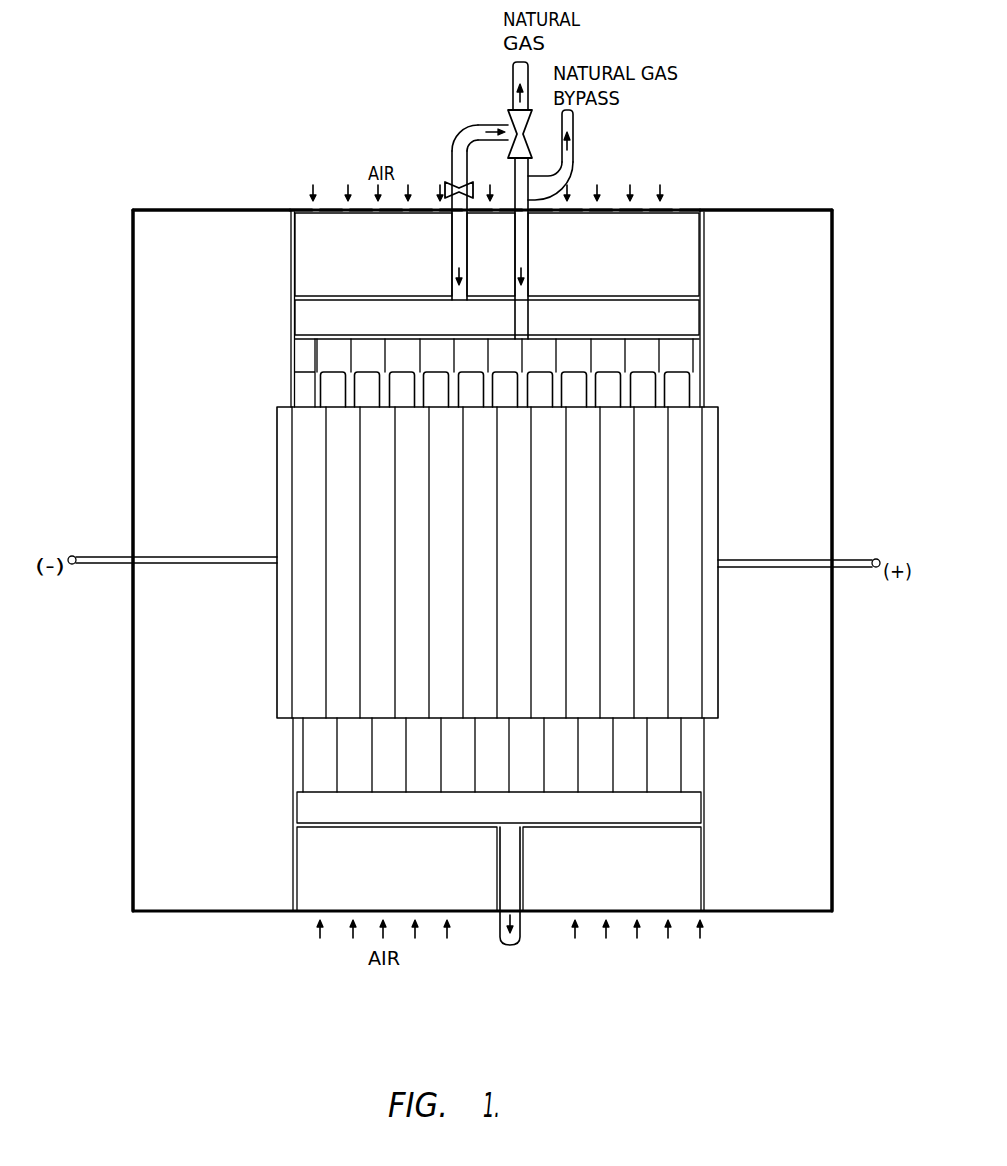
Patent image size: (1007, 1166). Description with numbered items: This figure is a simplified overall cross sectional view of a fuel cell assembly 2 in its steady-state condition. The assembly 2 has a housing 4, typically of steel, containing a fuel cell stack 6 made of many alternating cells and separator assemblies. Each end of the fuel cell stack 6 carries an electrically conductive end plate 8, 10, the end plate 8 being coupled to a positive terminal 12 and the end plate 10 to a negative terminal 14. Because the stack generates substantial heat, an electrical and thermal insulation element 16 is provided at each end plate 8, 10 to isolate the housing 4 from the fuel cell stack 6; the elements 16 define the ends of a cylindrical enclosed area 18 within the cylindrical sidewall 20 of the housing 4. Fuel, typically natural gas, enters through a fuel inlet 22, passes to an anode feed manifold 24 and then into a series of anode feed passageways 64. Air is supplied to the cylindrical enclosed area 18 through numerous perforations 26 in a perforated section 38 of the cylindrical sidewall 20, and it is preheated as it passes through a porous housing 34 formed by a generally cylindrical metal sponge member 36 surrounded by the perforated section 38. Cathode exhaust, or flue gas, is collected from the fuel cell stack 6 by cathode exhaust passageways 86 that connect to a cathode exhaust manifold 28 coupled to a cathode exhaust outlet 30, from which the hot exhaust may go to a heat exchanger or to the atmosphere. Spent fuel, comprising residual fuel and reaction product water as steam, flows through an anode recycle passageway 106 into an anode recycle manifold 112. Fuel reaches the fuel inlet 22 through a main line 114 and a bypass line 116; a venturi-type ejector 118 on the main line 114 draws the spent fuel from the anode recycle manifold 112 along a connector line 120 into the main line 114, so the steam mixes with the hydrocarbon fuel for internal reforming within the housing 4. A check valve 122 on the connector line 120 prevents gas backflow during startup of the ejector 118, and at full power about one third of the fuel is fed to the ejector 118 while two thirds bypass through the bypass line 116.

The fuel cell assembly 2 is at (808, 110).
The housing 4 is at (834, 297).
The fuel cell stack 6 is at (683, 460).
The end plate 8 is at (713, 508).
The end plate 10 is at (284, 459).
The positive terminal 12 is at (876, 559).
The negative terminal 14 is at (76, 565).
The electrical and thermal insulation element 16 is at (153, 313).
The cylindrical enclosed area 18 is at (695, 781).
The cylindrical sidewall 20 is at (170, 210).
The fuel inlet 22 is at (540, 200).
The anode feed manifold 24 is at (677, 366).
The perforations 26 is at (363, 210).
The cathode exhaust manifold 28 is at (690, 820).
The cathode exhaust outlet 30 is at (520, 943).
The porous housing 34 is at (289, 263).
The metal sponge member 36 is at (685, 258).
The perforated section 38 is at (672, 210).
The anode feed passageways 64 is at (294, 383).
The cathode exhaust passageways 86 is at (682, 752).
The anode recycle passageway 106 is at (294, 353).
The anode recycle manifold 112 is at (688, 322).
The main line 114 is at (513, 80).
The bypass line 116 is at (574, 126).
The venturi-type ejector 118 is at (508, 118).
The connector line 120 is at (452, 170).
The check valve 122 is at (468, 189).